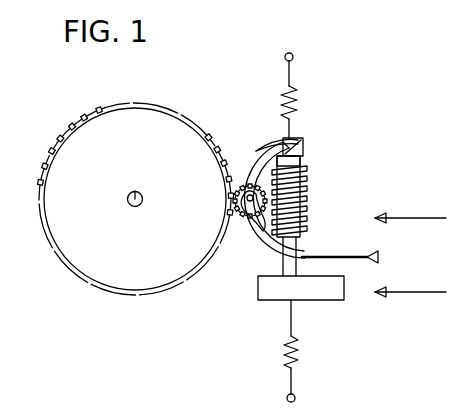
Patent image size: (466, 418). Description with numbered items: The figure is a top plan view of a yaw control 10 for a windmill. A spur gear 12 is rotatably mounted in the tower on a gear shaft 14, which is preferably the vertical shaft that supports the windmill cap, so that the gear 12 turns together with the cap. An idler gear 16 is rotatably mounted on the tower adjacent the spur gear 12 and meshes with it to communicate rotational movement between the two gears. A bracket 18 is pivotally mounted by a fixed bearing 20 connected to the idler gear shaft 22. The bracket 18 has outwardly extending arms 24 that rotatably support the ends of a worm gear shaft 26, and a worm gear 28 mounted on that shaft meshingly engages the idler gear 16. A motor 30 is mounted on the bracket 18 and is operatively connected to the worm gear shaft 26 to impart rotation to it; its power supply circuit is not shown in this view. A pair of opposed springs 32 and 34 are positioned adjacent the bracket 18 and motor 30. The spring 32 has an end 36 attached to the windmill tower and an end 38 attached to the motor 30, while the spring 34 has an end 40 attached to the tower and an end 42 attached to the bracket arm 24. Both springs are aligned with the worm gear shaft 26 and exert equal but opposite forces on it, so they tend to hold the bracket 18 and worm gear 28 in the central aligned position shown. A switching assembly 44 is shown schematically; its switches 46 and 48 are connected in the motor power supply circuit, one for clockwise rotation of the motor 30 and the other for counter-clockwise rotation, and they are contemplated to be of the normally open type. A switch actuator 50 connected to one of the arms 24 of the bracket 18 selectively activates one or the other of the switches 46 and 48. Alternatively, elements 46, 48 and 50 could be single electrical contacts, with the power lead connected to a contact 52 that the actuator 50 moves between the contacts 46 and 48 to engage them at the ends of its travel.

The yaw control 10 is at (215, 79).
The spur gear 12 is at (87, 148).
The gear shaft 14 is at (135, 191).
The idler gear 16 is at (240, 189).
The bracket 18 is at (284, 129).
The fixed bearing 20 is at (257, 229).
The idler gear shaft 22 is at (238, 199).
The bracket arms 24 is at (303, 141).
The worm gear shaft 26 is at (300, 159).
The worm gear 28 is at (306, 187).
The motor 30 is at (337, 287).
The spring 32 is at (299, 346).
The spring 34 is at (298, 104).
The spring end 36 is at (295, 399).
The spring end 38 is at (288, 302).
The spring end 40 is at (315, 40).
The spring end 42 is at (279, 147).
The switching assembly 44 is at (355, 235).
The switch 46 is at (413, 186).
The switch 48 is at (378, 291).
The switch actuator 50 is at (340, 255).
The contact 52 is at (387, 250).